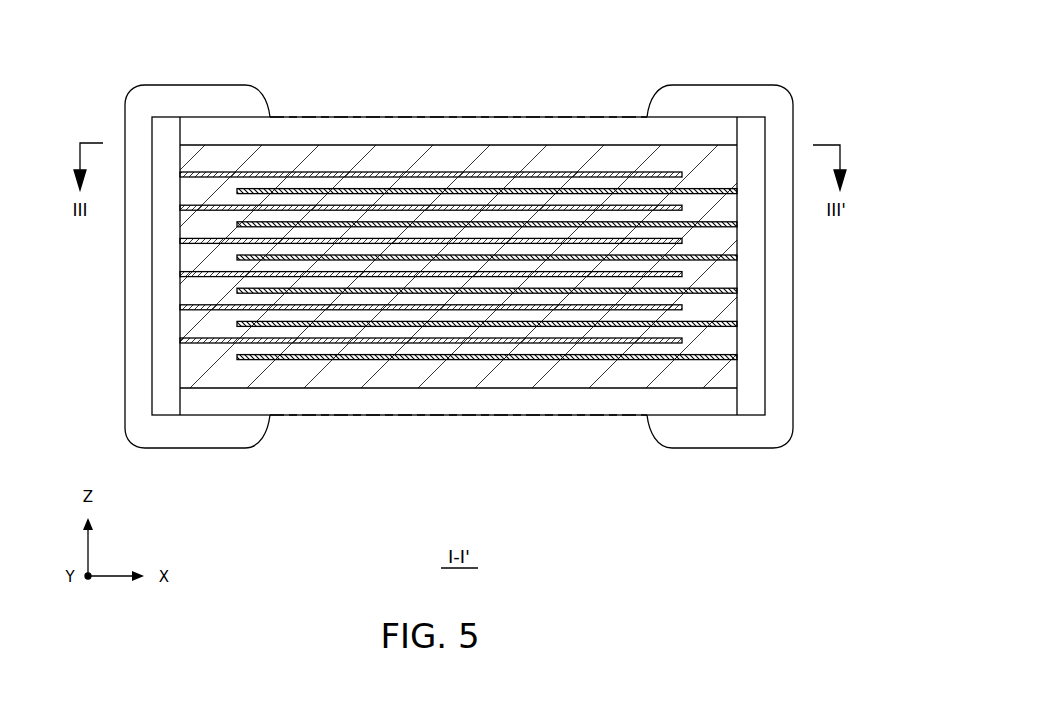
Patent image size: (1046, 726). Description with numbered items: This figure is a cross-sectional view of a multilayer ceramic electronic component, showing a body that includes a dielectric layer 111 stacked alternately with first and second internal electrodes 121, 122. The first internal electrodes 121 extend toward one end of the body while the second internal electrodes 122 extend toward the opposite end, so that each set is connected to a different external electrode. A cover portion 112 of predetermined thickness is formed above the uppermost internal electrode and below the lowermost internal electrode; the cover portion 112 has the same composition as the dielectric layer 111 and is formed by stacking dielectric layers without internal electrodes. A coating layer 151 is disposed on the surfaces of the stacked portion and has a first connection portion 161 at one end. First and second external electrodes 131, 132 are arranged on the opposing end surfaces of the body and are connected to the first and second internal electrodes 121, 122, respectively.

The dielectric layer 111 is at (727, 308).
The cover portion 112 is at (717, 167).
The first internal electrode 121 is at (702, 270).
The second internal electrode 122 is at (737, 323).
The first external electrode 131 is at (196, 100).
The second external electrode 132 is at (725, 100).
The coating layer 151 is at (378, 400).
The first connection portion 161 is at (165, 296).